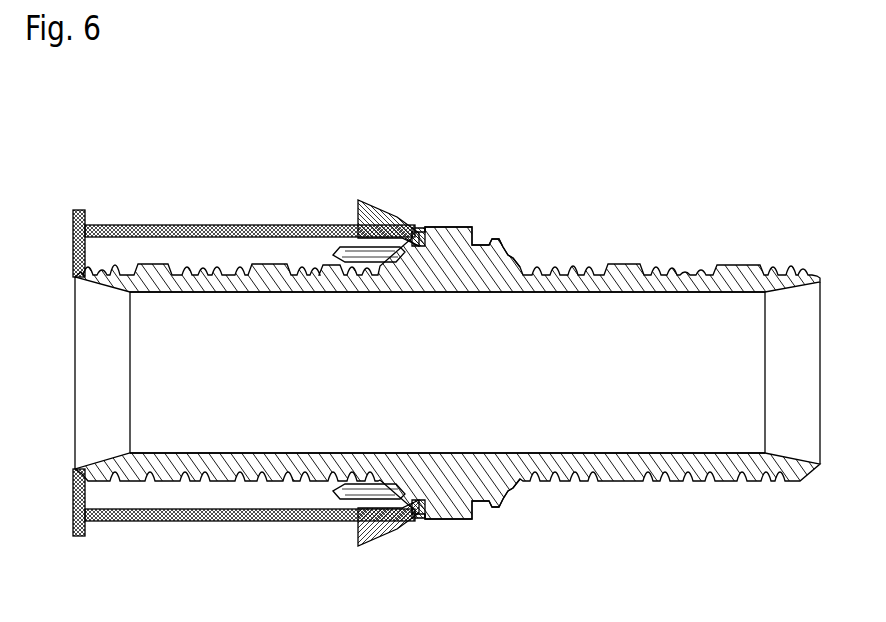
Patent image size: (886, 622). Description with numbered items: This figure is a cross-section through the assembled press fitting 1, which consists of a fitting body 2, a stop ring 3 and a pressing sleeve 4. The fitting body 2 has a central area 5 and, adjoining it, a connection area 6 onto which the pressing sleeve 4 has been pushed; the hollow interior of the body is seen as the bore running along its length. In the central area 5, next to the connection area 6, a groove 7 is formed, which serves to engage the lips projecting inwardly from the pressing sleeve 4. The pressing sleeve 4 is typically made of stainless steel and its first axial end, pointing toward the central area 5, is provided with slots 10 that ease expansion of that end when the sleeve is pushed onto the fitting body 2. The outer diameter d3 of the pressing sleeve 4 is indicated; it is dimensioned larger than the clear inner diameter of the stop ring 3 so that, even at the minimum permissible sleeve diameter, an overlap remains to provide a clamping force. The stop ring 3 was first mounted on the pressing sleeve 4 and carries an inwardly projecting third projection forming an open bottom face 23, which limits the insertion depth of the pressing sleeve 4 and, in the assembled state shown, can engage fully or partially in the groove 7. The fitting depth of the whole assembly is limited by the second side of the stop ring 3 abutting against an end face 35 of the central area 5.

The press fitting 1 is at (784, 153).
The fitting body 2 is at (620, 286).
The stop ring 3 is at (361, 200).
The pressing sleeve 4 is at (110, 523).
The central area 5 is at (447, 229).
The connection area 6 is at (285, 313).
The groove 7 is at (414, 236).
The slots 10 is at (333, 251).
The open bottom face 23 is at (413, 232).
The end face 35 is at (421, 510).
The outer diameter d3 is at (203, 225).